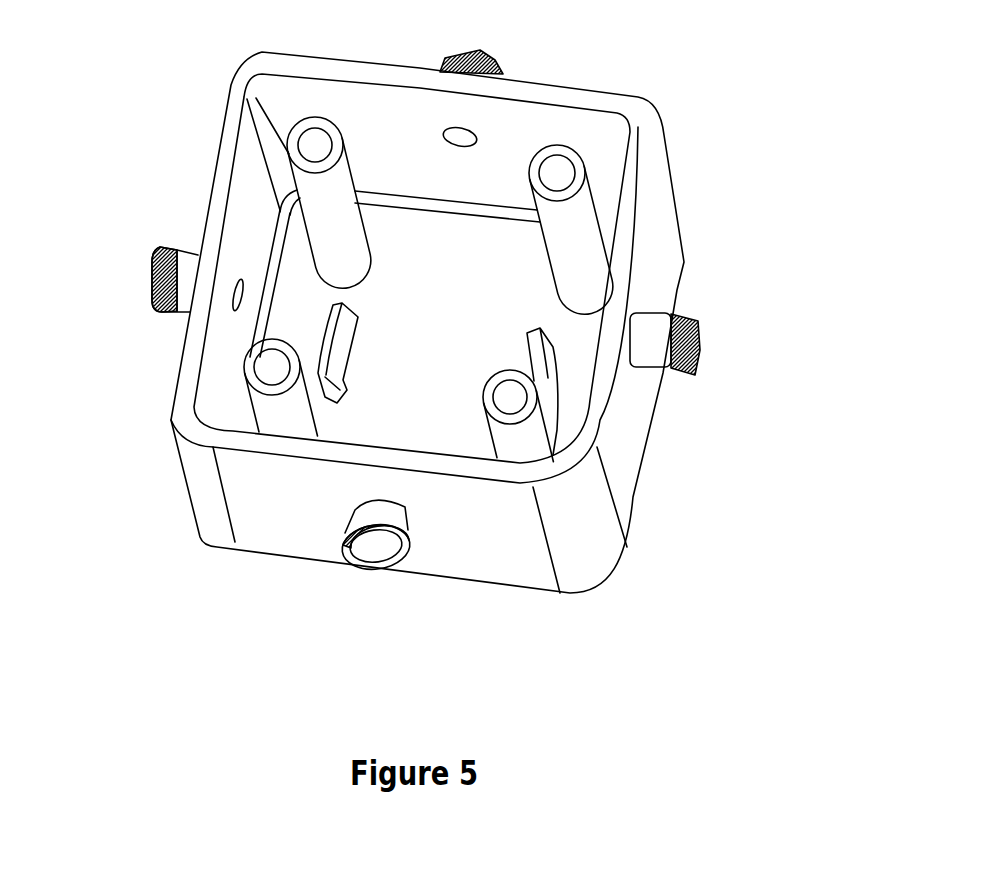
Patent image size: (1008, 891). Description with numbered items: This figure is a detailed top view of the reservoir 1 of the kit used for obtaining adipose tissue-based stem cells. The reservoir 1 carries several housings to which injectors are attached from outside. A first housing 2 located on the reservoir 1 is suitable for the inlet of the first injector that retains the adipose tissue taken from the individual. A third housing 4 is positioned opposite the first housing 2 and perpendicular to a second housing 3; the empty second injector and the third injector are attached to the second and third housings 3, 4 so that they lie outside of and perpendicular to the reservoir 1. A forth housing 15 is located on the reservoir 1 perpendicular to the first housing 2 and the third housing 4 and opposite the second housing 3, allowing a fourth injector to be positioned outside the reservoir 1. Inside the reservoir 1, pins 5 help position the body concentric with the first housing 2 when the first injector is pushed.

The reservoir 1 is at (277, 527).
The first housing 2 is at (650, 345).
The second housing 3 is at (392, 520).
The third housing 4 is at (153, 290).
The pins 5 is at (570, 233).
The forth housing 15 is at (483, 56).